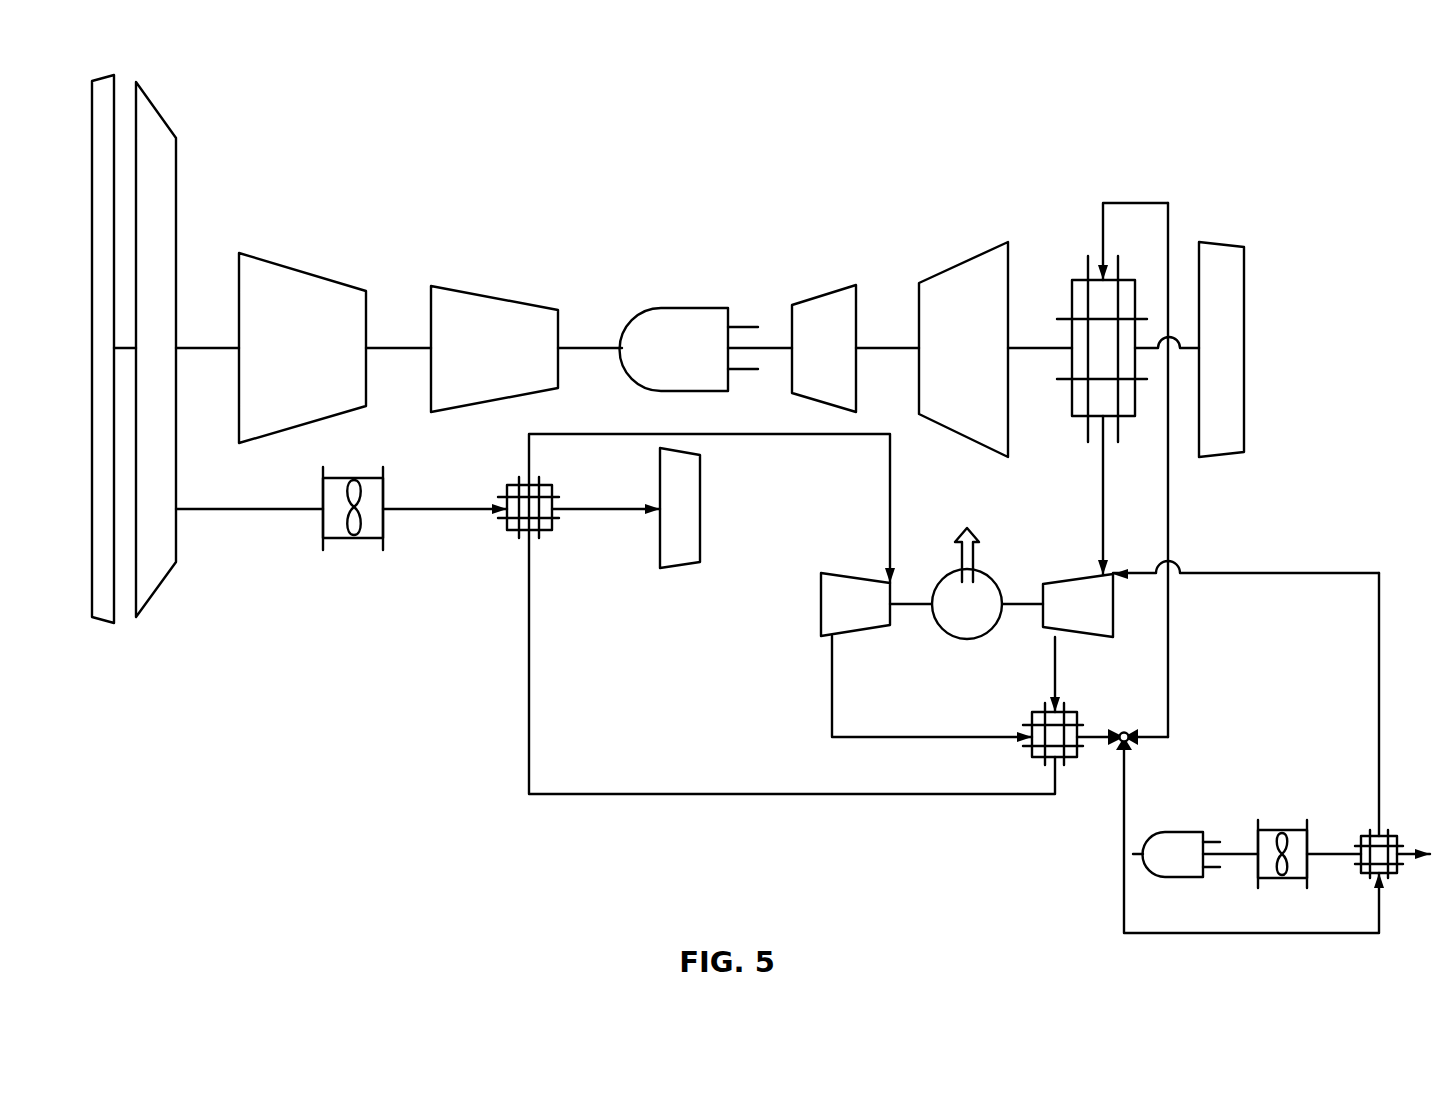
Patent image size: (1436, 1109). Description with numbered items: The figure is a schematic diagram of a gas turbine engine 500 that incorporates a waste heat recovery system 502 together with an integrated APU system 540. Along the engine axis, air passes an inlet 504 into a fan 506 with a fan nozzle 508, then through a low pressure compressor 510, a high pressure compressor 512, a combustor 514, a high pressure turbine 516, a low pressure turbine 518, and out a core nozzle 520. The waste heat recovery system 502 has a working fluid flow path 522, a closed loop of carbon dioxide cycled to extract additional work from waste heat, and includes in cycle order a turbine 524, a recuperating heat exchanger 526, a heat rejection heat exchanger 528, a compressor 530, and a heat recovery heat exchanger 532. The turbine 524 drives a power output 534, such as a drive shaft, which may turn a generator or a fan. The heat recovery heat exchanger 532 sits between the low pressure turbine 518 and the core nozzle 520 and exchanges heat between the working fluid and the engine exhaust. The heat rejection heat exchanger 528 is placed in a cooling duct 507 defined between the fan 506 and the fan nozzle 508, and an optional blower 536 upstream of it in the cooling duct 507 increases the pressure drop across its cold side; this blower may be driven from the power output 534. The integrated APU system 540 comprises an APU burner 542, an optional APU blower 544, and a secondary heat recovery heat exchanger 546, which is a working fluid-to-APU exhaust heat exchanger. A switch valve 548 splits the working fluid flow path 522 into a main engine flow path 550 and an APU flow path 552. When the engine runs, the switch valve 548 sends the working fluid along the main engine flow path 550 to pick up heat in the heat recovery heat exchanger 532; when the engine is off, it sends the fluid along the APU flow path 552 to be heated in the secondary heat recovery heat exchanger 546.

The gas turbine engine 500 is at (1243, 117).
The waste heat recovery system 502 is at (492, 727).
The inlet 504 is at (100, 605).
The fan 506 is at (168, 150).
The cooling duct 507 is at (443, 506).
The fan nozzle 508 is at (682, 553).
The low pressure compressor 510 is at (312, 289).
The high pressure compressor 512 is at (483, 303).
The combustor 514 is at (673, 322).
The high pressure turbine 516 is at (840, 302).
The low pressure turbine 518 is at (994, 257).
The core nozzle 520 is at (1222, 252).
The working fluid flow path 522 is at (753, 797).
The turbine 524 is at (1061, 593).
The recuperating heat exchanger 526 is at (1072, 752).
The heat rejection heat exchanger 528 is at (512, 525).
The compressor 530 is at (844, 595).
The heat recovery heat exchanger 532 is at (1120, 413).
The power output 534 is at (990, 587).
The optional blower 536 is at (343, 533).
The integrated APU system 540 is at (1322, 952).
The APU burner 542 is at (1172, 840).
The APU blower 544 is at (1268, 840).
The secondary heat recovery heat exchanger 546 is at (1390, 840).
The switch valve 548 is at (1123, 728).
The main engine flow path 550 is at (1170, 660).
The APU flow path 552 is at (1120, 862).